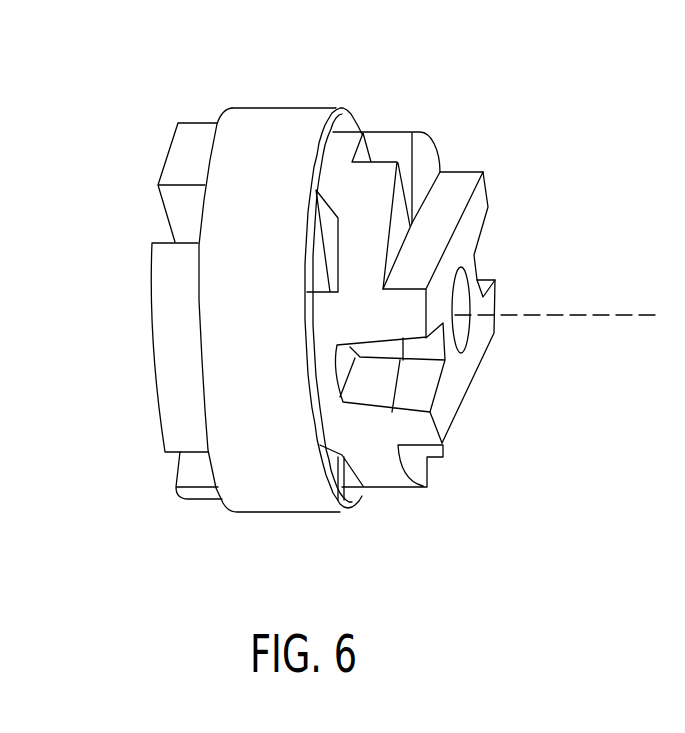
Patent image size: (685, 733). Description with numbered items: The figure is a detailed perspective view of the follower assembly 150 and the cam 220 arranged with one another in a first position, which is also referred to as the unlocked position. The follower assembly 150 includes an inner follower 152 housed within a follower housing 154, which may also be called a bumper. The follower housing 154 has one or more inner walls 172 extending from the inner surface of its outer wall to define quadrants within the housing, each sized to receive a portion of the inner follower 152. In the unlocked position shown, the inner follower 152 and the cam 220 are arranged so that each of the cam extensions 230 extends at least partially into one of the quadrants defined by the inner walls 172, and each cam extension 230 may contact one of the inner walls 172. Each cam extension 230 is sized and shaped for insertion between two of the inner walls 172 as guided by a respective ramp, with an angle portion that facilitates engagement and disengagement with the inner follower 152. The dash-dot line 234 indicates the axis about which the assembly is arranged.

The follower assembly 150 is at (144, 131).
The inner follower 152 is at (193, 122).
The follower housing 154 is at (255, 108).
The inner walls 172 is at (343, 120).
The cam 220 is at (423, 131).
The cam extensions 230 is at (338, 140).
The rotation axis 234 is at (545, 312).